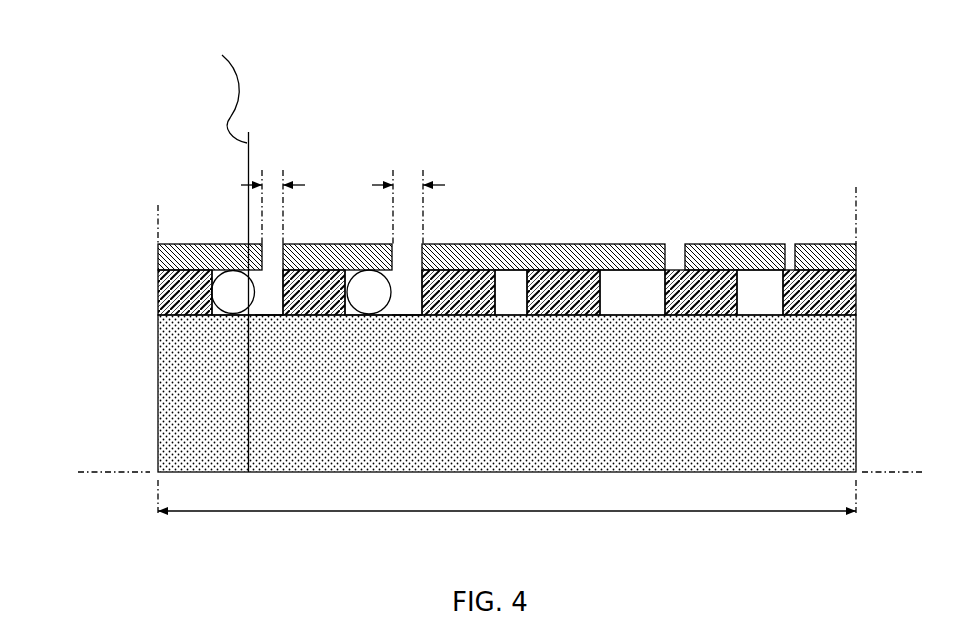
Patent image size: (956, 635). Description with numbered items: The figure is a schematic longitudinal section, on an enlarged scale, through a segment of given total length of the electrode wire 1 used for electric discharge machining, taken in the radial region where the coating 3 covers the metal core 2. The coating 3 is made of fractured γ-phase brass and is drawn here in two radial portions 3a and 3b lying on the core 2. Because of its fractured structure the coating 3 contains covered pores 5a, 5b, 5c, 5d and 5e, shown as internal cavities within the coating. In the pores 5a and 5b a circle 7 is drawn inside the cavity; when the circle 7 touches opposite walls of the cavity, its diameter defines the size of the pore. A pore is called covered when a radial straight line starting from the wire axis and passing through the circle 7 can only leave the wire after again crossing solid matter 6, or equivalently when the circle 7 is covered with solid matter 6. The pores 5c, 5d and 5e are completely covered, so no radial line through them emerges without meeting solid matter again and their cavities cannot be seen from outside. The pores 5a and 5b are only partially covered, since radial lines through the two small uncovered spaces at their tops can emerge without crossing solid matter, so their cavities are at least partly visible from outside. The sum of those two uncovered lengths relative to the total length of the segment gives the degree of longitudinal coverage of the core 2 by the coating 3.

The electrode wire 1 is at (110, 165).
The metal core 2 is at (158, 374).
The coating 3 is at (137, 315).
The lower layer 3a is at (857, 288).
The upper layer 3b is at (857, 261).
The covered pore 5a is at (208, 244).
The covered pore 5b is at (353, 244).
The covered pore 5c is at (512, 288).
The covered pore 5d is at (620, 290).
The covered pore 5e is at (753, 288).
The solid matter 6 is at (229, 271).
The circle 7 is at (252, 307).